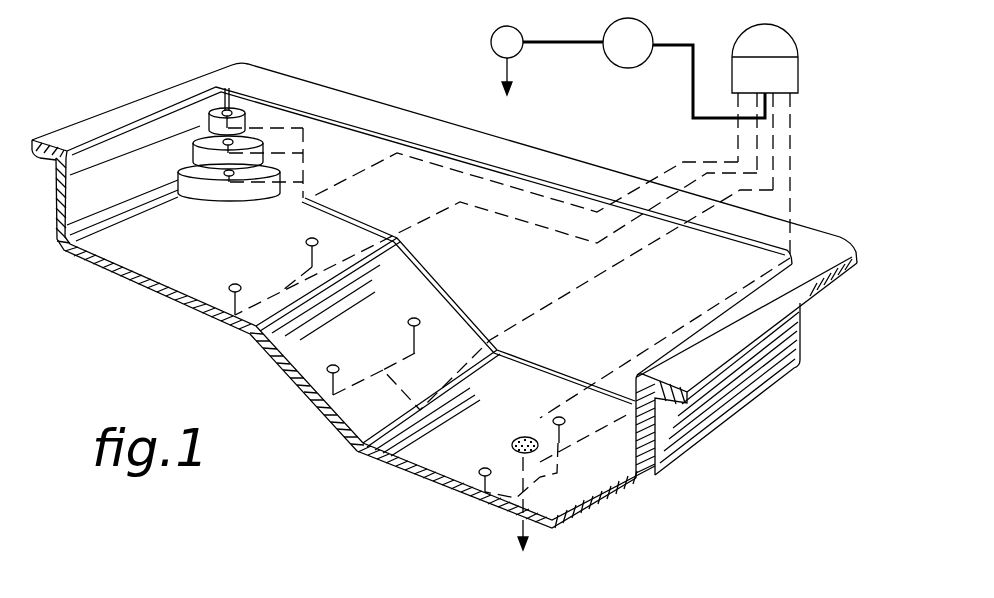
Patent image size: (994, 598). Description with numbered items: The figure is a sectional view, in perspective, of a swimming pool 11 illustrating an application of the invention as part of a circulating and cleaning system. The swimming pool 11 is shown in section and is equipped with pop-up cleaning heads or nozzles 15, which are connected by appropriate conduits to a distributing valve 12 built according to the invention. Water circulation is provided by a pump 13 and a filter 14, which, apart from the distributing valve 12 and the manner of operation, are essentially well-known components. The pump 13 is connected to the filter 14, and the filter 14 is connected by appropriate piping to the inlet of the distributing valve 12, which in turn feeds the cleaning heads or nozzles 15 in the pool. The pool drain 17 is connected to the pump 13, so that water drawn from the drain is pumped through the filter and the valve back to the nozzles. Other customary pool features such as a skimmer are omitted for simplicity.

The swimming pool 11 is at (692, 443).
The distributing valve 12 is at (800, 47).
The pump 13 is at (518, 30).
The filter 14 is at (650, 30).
The pop-up cleaning heads or nozzles 15 is at (228, 112).
The pool drain 17 is at (478, 474).